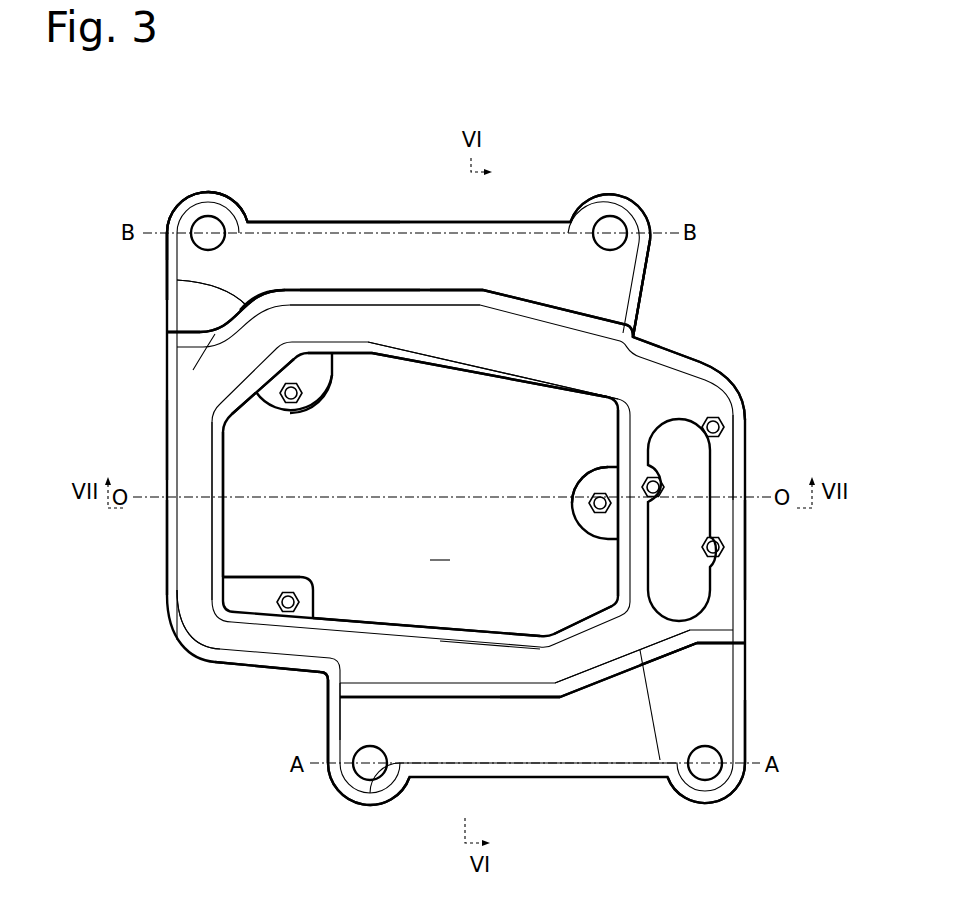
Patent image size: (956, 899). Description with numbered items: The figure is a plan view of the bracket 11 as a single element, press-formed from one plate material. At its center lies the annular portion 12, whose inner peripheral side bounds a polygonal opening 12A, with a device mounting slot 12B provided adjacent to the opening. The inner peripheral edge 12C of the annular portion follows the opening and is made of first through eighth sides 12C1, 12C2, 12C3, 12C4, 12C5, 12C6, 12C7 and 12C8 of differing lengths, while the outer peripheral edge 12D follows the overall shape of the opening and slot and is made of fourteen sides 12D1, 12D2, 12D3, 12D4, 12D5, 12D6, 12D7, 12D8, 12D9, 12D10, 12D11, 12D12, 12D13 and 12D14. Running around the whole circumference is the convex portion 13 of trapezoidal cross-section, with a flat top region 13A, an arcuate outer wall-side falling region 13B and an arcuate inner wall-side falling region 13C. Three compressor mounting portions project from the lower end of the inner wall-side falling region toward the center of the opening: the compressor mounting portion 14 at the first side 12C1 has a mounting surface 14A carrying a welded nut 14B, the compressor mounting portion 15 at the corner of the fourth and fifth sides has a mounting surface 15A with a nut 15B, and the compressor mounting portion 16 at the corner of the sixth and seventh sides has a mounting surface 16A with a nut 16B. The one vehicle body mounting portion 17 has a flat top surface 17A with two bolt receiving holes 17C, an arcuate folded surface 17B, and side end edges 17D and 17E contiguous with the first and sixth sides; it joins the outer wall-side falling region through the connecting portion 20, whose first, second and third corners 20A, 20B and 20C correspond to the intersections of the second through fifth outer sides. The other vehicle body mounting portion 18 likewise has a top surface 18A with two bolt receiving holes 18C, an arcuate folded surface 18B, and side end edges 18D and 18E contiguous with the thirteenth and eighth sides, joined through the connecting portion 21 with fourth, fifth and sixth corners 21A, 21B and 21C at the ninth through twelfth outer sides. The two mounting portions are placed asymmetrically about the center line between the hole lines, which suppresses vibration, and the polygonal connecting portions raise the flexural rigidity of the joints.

The bracket 11 is at (165, 210).
The annular portion 12 is at (160, 360).
The opening 12A is at (444, 560).
The device mounting slot 12B is at (705, 472).
The inner peripheral edge 12C is at (438, 367).
The first side 12C1 is at (617, 447).
The second side 12C2 is at (587, 617).
The third side 12C3 is at (492, 628).
The fourth side 12C4 is at (401, 624).
The fifth side 12C5 is at (230, 503).
The sixth side 12C6 is at (247, 403).
The seventh side 12C7 is at (367, 356).
The eighth side 12C8 is at (507, 378).
The outer peripheral edge 12D is at (175, 553).
The first side 12D1 is at (748, 553).
The second side 12D2 is at (720, 650).
The third side 12D3 is at (672, 674).
The fourth side 12D4 is at (549, 700).
The fifth side 12D5 is at (338, 715).
The sixth side 12D6 is at (333, 677).
The seventh side 12D7 is at (240, 665).
The eighth side 12D8 is at (167, 440).
The ninth side 12D9 is at (167, 330).
The tenth side 12D10 is at (177, 280).
The eleventh side 12D11 is at (376, 288).
The twelfth side 12D12 is at (560, 308).
The thirteenth side 12D13 is at (637, 336).
The fourteenth side 12D14 is at (680, 352).
The convex portion 13 is at (680, 398).
The top region 13A is at (212, 627).
The outer wall-side falling region 13B is at (416, 302).
The inner wall-side falling region 13C is at (216, 548).
The compressor mounting portion 14 is at (571, 509).
The mounting surface 14A is at (603, 486).
The nut 14B is at (602, 517).
The compressor mounting portion 15 is at (306, 575).
The mounting surface 15A is at (243, 591).
The nut 15B is at (300, 598).
The compressor mounting portion 16 is at (314, 419).
The mounting surface 16A is at (310, 388).
The nut 16B is at (294, 402).
The vehicle body mounting portion 17 is at (339, 800).
The top surface 17A is at (583, 730).
The arcuate folded surface 17B is at (707, 803).
The bolt receiving holes 17C is at (368, 778).
The one side end edge 17D is at (748, 723).
The other side end edge 17E is at (328, 740).
The vehicle body mounting portion 18 is at (229, 190).
The top surface 18A is at (327, 262).
The arcuate folded surface 18B is at (615, 196).
The bolt receiving holes 18C is at (205, 218).
The one side end edge 18D is at (652, 268).
The other side end edge 18E is at (165, 267).
The connecting portion 20 is at (517, 702).
The first corner 20A is at (706, 638).
The second corner 20B is at (609, 700).
The third corner 20C is at (418, 765).
The connecting portion 21 is at (518, 290).
The fourth corner 21A is at (205, 352).
The fifth corner 21B is at (263, 285).
The sixth corner 21C is at (467, 287).